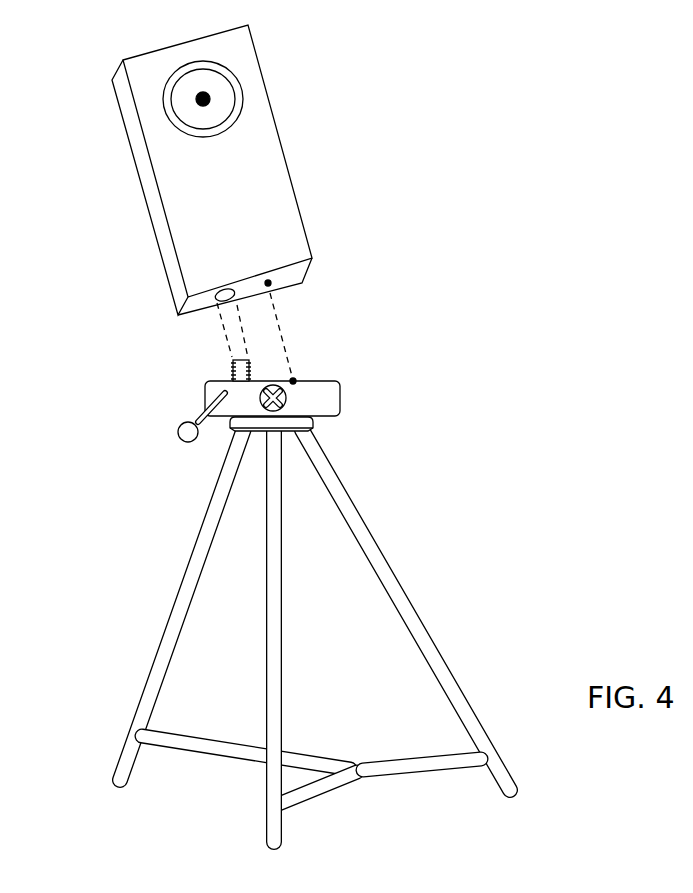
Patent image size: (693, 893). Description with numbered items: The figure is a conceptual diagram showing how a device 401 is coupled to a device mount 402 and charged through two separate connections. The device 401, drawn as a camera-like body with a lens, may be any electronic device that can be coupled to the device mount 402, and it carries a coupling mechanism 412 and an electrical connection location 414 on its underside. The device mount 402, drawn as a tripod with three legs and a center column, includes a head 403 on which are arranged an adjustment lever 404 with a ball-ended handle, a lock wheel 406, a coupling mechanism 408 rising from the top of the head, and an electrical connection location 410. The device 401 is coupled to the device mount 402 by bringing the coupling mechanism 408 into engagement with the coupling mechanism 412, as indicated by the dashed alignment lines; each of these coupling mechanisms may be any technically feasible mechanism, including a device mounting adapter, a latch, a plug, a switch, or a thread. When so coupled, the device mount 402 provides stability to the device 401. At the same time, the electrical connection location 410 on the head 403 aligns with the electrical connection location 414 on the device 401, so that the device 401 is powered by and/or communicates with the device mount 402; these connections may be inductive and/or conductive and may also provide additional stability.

The device 401 is at (265, 78).
The device mount 402 is at (385, 558).
The head 403 is at (340, 390).
The adjustment lever 404 is at (180, 430).
The lock wheel 406 is at (286, 398).
The coupling mechanism 408 is at (231, 372).
The electrical connection location 410 is at (295, 380).
The coupling mechanism 412 is at (218, 292).
The electrical connection location 414 is at (268, 280).